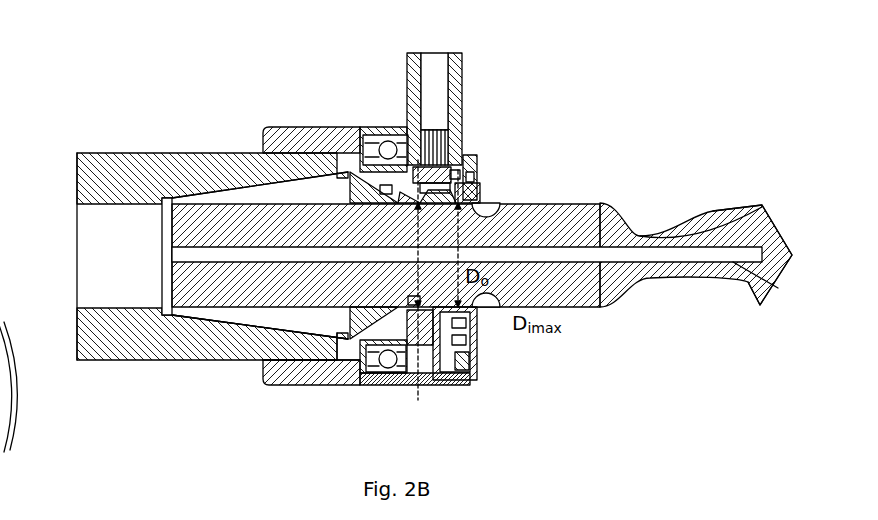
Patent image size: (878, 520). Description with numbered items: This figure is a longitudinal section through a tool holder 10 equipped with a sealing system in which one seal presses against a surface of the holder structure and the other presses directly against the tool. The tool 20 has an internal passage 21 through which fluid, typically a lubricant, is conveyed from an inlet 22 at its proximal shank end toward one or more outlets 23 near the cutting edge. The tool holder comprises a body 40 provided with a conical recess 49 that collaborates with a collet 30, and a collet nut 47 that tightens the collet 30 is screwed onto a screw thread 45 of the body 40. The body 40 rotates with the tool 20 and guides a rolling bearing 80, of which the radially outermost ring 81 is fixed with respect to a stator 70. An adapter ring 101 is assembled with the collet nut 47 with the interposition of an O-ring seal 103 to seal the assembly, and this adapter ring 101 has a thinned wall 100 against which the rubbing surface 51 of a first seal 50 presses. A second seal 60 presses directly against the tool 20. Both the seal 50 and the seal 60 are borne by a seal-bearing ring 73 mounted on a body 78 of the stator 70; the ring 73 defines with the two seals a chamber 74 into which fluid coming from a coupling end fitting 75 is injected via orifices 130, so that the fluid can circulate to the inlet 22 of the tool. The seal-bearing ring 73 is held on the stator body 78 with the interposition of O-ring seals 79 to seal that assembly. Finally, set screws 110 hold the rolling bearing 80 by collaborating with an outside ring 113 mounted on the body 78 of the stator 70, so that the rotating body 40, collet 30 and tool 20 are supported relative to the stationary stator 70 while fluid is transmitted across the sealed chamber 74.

The tool holder 10 is at (168, 110).
The tool 20 is at (565, 309).
The internal passage 21 is at (635, 250).
The inlet 22 is at (162, 250).
The outlets 23 is at (777, 223).
The collet 30 is at (288, 323).
The body 40 is at (115, 360).
The screw thread 45 is at (263, 353).
The collet nut 47 is at (300, 387).
The conical recess 49 is at (217, 325).
The seal 50 is at (460, 170).
The rubbing surface 51 is at (417, 206).
The seal 60 is at (483, 195).
The stator 70 is at (478, 382).
The seal-bearing ring 73 is at (478, 340).
The chamber 74 is at (480, 315).
The coupling end fitting 75 is at (462, 100).
The body of the stator 78 is at (478, 160).
The O-ring seals 79 is at (388, 140).
The rolling bearing 80 is at (368, 387).
The ring 81 is at (402, 385).
The thinned wall 100 is at (438, 280).
The adapter ring 101 is at (414, 296).
The O-ring seal 103 is at (350, 172).
The set screws 110 is at (447, 383).
The outside ring 113 is at (417, 385).
The orifices 130 is at (460, 173).